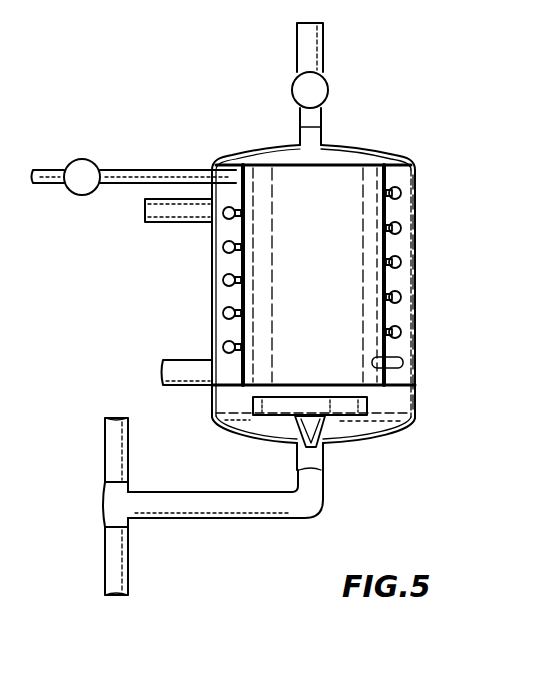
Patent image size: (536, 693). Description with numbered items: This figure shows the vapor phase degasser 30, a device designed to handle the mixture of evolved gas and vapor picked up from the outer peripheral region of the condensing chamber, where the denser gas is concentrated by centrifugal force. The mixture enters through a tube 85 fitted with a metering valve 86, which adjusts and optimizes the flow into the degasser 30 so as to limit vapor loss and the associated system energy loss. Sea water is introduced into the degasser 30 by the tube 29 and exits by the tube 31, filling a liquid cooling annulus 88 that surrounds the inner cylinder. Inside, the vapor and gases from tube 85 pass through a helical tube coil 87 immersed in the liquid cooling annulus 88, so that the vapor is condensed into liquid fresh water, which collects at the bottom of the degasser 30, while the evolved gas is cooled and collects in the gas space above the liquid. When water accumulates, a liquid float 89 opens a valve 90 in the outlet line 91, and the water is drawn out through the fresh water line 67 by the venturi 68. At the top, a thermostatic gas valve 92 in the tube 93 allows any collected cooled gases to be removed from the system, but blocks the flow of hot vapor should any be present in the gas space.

The tube 29 is at (156, 226).
The vapor phase degasser 30 is at (350, 157).
The tube 31 is at (177, 358).
The fresh water line 67 is at (105, 455).
The venturi 68 is at (105, 505).
The tube 85 is at (43, 168).
The metering valve 86 is at (84, 159).
The helical tube coil 87 is at (399, 226).
The liquid cooling annulus 88 is at (406, 278).
The liquid float 89 is at (313, 395).
The valve 90 is at (319, 440).
The outlet line 91 is at (195, 519).
The thermostatic gas valve 92 is at (330, 88).
The tube 93 is at (325, 47).